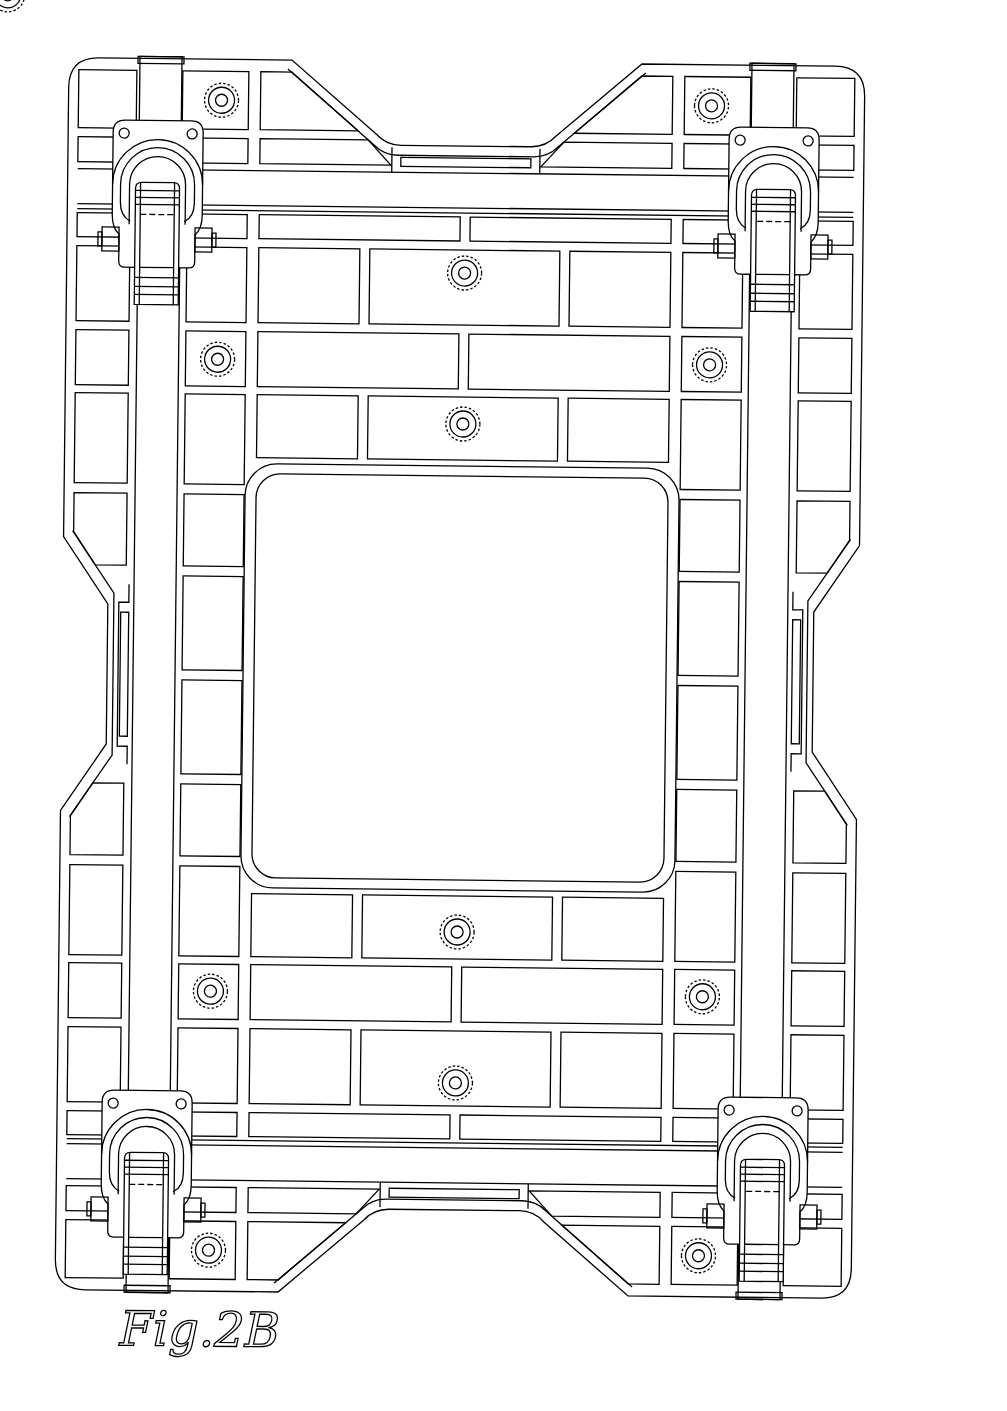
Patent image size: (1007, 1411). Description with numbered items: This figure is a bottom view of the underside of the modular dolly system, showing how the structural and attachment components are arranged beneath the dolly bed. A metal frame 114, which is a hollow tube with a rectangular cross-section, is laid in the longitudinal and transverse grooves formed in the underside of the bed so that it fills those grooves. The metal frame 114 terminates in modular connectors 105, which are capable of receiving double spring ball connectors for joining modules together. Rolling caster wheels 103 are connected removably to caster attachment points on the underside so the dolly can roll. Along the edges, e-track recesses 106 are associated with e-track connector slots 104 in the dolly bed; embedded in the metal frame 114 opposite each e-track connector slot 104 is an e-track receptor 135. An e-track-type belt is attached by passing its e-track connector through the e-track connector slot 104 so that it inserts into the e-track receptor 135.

The rolling caster wheel 103 is at (767, 244).
The e-track connector slot 104 is at (803, 685).
The modular connector 105 is at (154, 84).
The e-track recess 106 is at (482, 94).
The metal frame 114 is at (609, 192).
The e-track receptor 135 is at (793, 666).